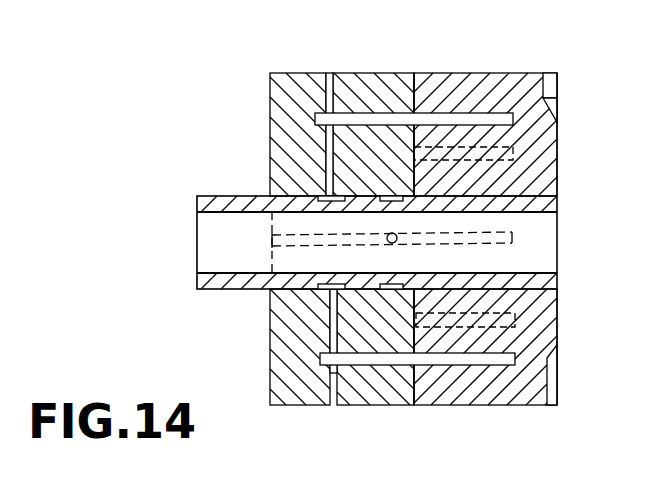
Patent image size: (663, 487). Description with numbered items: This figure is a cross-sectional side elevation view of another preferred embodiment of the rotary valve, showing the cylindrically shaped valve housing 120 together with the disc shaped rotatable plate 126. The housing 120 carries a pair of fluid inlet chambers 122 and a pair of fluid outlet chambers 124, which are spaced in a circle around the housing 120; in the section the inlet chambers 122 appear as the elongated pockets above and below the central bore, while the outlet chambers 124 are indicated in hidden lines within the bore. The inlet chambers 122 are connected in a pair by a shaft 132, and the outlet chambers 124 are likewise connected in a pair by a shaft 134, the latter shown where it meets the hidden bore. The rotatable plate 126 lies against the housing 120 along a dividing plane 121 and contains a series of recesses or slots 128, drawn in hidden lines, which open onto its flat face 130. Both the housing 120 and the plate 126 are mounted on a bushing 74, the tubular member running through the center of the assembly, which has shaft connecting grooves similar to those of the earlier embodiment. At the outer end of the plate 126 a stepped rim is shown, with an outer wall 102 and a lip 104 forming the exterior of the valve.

The bushing 74 is at (217, 290).
The outer wall 102 is at (557, 106).
The flange lip 104 is at (557, 82).
The valve housing 120 is at (294, 73).
The interface line 121 is at (416, 381).
The fluid inlet chambers 122 is at (355, 116).
The fluid outlet chambers 124 is at (272, 245).
The rotatable plate 126 is at (479, 73).
The recesses or slots 128 is at (515, 313).
The flat face 130 is at (414, 382).
The shaft 132 is at (330, 326).
The shaft 134 is at (398, 243).